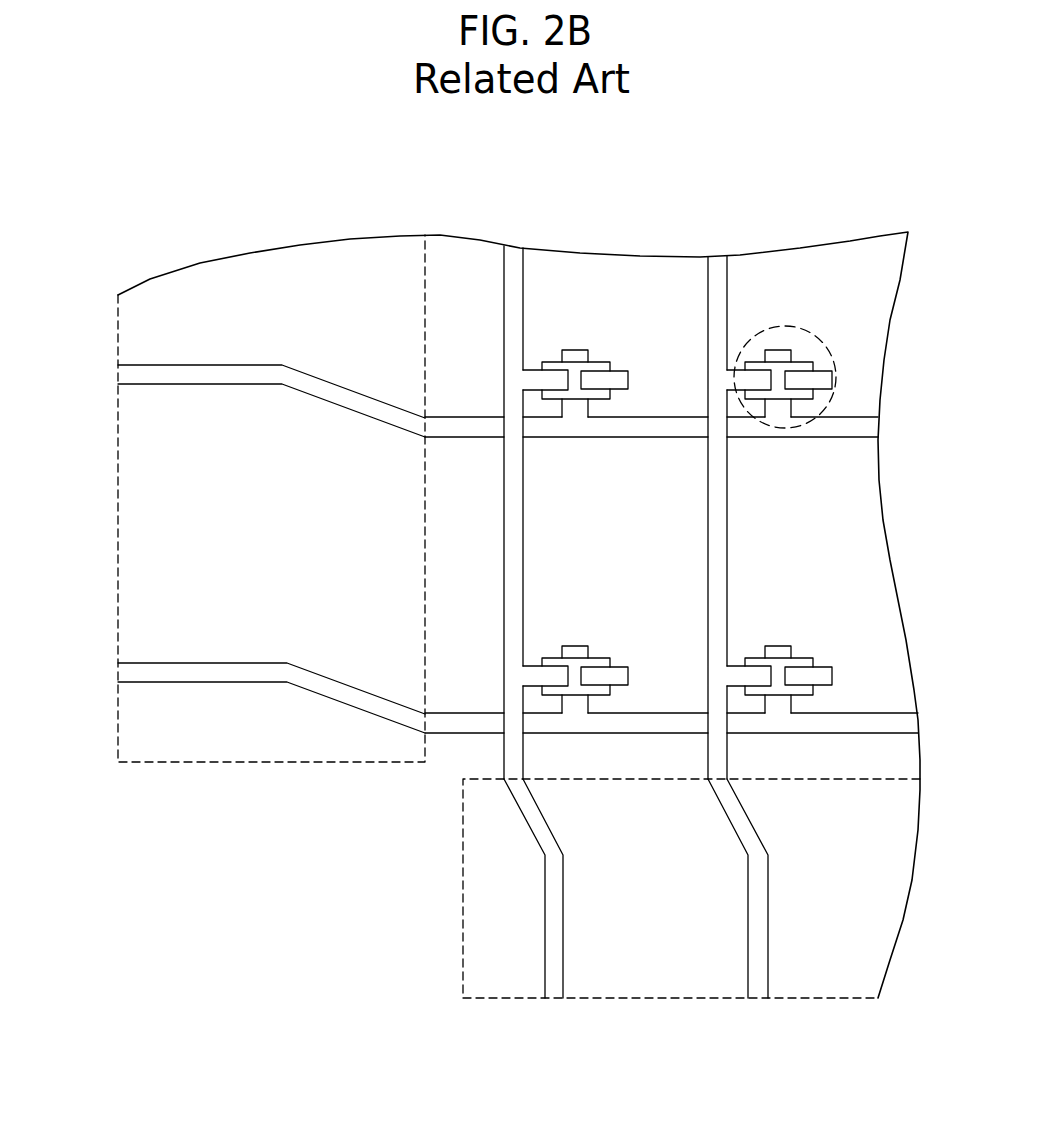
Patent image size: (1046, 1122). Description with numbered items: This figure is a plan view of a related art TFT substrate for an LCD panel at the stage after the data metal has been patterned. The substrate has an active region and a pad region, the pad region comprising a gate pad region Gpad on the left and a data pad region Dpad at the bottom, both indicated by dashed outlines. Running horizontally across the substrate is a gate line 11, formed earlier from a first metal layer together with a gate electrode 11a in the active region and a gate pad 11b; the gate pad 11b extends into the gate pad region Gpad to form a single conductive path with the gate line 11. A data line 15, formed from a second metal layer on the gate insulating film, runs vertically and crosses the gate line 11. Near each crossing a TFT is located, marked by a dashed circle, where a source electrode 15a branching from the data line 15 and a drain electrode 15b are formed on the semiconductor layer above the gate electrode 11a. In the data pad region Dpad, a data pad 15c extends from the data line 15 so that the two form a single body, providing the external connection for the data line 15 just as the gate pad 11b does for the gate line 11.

The data line 15 is at (716, 268).
The source electrode 15a is at (753, 376).
The drain electrode 15b is at (823, 378).
The data pad 15c is at (757, 985).
The gate line 11 is at (865, 427).
The gate electrode 11a is at (778, 357).
The gate pad 11b is at (118, 371).
The thin film transistor TFT is at (837, 362).
The gate pad region Gpad is at (220, 763).
The data pad region Dpad is at (463, 918).